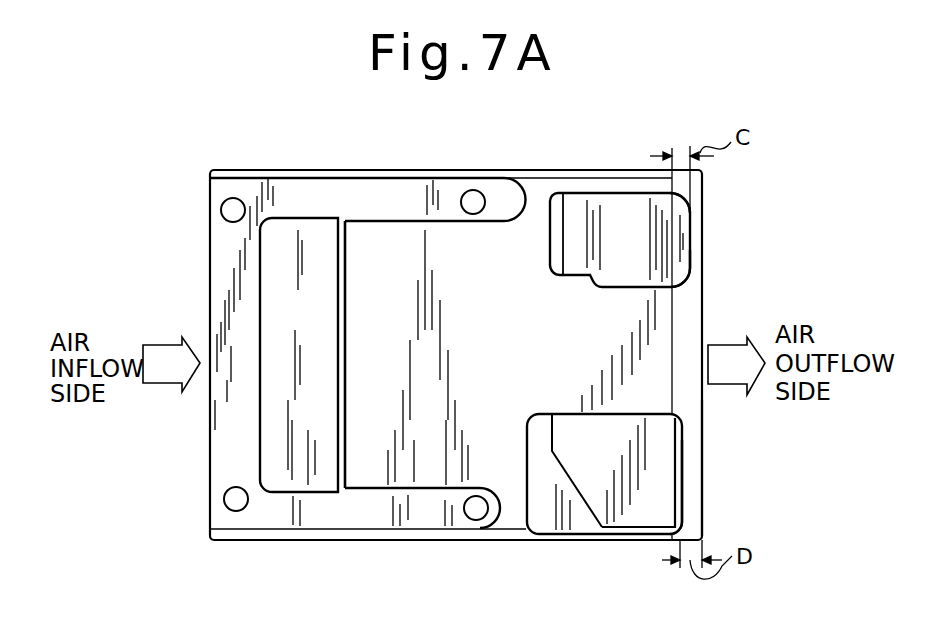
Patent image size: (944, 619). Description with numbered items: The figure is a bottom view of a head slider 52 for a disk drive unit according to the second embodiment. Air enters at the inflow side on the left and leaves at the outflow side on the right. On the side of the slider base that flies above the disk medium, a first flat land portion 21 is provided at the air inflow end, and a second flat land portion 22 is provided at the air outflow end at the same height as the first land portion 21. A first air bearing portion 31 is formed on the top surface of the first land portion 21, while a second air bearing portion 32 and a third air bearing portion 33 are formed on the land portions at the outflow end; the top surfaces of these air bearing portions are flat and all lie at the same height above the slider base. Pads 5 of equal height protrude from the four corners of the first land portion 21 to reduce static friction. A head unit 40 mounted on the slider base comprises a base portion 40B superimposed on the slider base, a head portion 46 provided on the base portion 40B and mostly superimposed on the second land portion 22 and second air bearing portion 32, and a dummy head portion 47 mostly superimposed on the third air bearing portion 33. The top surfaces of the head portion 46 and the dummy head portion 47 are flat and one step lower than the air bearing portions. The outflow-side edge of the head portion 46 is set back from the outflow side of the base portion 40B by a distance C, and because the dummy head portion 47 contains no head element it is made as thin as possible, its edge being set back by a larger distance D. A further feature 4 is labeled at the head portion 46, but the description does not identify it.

The head slider 52 is at (199, 251).
The pads 5 is at (235, 207).
The first flat land portion 21 is at (347, 285).
The first air bearing portion 31 is at (334, 392).
The second flat land portion 22 is at (551, 250).
The second air bearing portion 32 is at (606, 265).
The third air bearing portion 33 is at (614, 430).
The curved projection 4 is at (684, 213).
The head portion 46 is at (692, 262).
The base portion 40B is at (702, 399).
The dummy head portion 47 is at (683, 475).
The head unit 40 is at (702, 505).